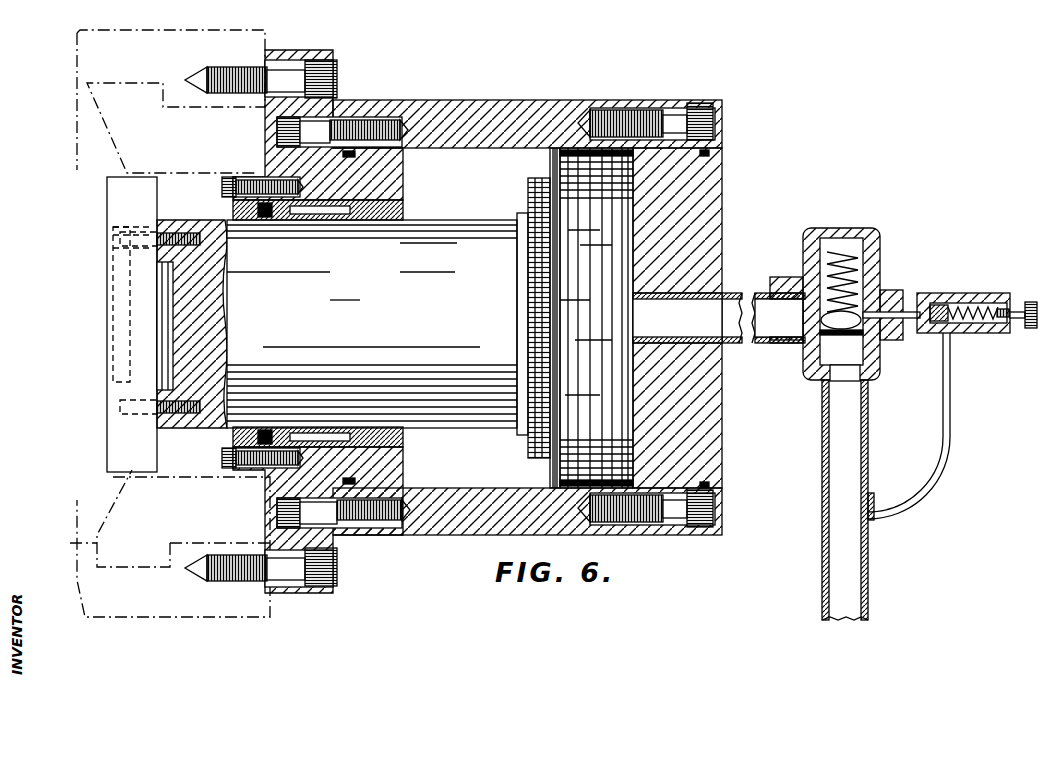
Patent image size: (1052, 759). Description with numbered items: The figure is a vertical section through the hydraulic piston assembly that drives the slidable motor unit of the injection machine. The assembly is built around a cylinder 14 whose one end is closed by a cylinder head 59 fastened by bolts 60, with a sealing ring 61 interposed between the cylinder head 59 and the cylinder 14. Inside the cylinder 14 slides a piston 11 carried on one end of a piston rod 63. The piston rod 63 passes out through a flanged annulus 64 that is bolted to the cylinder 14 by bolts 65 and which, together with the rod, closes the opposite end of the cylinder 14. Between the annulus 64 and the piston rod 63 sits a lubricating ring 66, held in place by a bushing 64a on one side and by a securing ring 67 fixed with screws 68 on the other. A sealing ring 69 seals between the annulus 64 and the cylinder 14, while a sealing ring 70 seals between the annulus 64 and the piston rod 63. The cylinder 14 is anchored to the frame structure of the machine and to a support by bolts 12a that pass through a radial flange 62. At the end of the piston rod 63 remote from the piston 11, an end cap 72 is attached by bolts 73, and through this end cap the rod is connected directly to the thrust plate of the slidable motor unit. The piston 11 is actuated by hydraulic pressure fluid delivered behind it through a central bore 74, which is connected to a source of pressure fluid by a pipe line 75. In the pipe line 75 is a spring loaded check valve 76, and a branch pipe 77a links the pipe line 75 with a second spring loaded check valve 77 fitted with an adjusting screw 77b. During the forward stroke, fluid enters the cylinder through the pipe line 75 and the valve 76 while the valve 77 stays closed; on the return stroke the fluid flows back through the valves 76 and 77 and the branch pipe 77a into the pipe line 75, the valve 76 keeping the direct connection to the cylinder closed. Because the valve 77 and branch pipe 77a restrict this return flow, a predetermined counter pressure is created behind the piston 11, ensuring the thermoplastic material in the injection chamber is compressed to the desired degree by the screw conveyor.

The piston 11 is at (558, 108).
The bolts 12a is at (237, 92).
The cylinder 14 is at (407, 116).
The cylinder head 59 is at (705, 209).
The bolts 60 is at (640, 106).
The sealing ring 61 is at (712, 150).
The radial flange 62 is at (318, 588).
The piston rod 63 is at (525, 225).
The flanged annulus 64 is at (273, 160).
The bushing 64a is at (363, 222).
The bolts 65 is at (328, 125).
The lubricating ring 66 is at (224, 458).
The securing ring 67 is at (262, 222).
The screws 68 is at (222, 190).
The sealing ring 69 is at (352, 157).
The sealing ring 70 is at (240, 222).
The end cap 72 is at (139, 463).
The bolts 73 is at (146, 421).
The central bore 74 is at (733, 293).
The pipe line 75 is at (830, 418).
The spring loaded check valve 76 is at (848, 240).
The second spring loaded check valve 77 is at (957, 292).
The branch pipe 77a is at (950, 436).
The adjusting screw 77b is at (1032, 300).